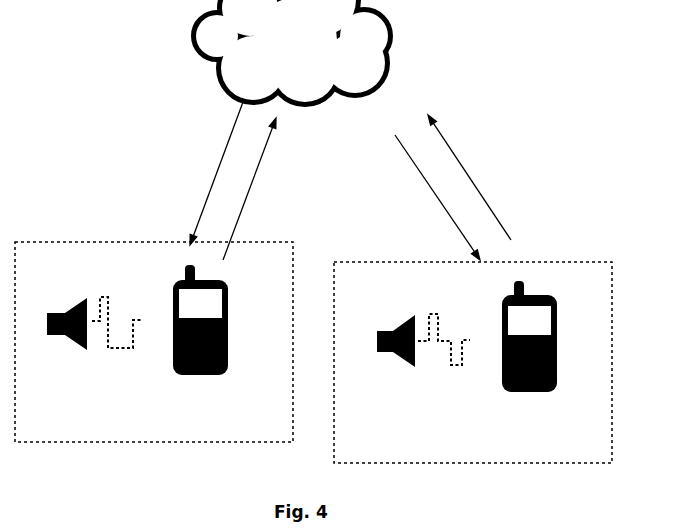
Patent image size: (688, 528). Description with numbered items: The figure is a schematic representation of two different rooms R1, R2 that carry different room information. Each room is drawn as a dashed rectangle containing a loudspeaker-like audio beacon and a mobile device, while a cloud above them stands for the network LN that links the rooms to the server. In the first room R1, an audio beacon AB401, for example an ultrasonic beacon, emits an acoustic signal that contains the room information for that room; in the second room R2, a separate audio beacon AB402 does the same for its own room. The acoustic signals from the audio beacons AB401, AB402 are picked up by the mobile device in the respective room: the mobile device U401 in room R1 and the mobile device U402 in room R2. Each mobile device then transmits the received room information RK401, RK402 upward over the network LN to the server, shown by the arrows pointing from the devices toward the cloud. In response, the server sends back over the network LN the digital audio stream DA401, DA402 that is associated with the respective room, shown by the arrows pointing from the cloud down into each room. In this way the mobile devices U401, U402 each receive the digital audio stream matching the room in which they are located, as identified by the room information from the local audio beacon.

The network LN is at (292, 51).
The digital audio stream DA401 is at (190, 173).
The room information RK401 is at (271, 189).
The digital audio stream DA402 is at (432, 197).
The room information RK402 is at (494, 177).
The room R1 is at (154, 342).
The room R2 is at (473, 362).
The audio beacon AB401 is at (97, 337).
The audio beacon AB402 is at (423, 354).
The mobile device U401 is at (199, 335).
The mobile device U402 is at (526, 351).